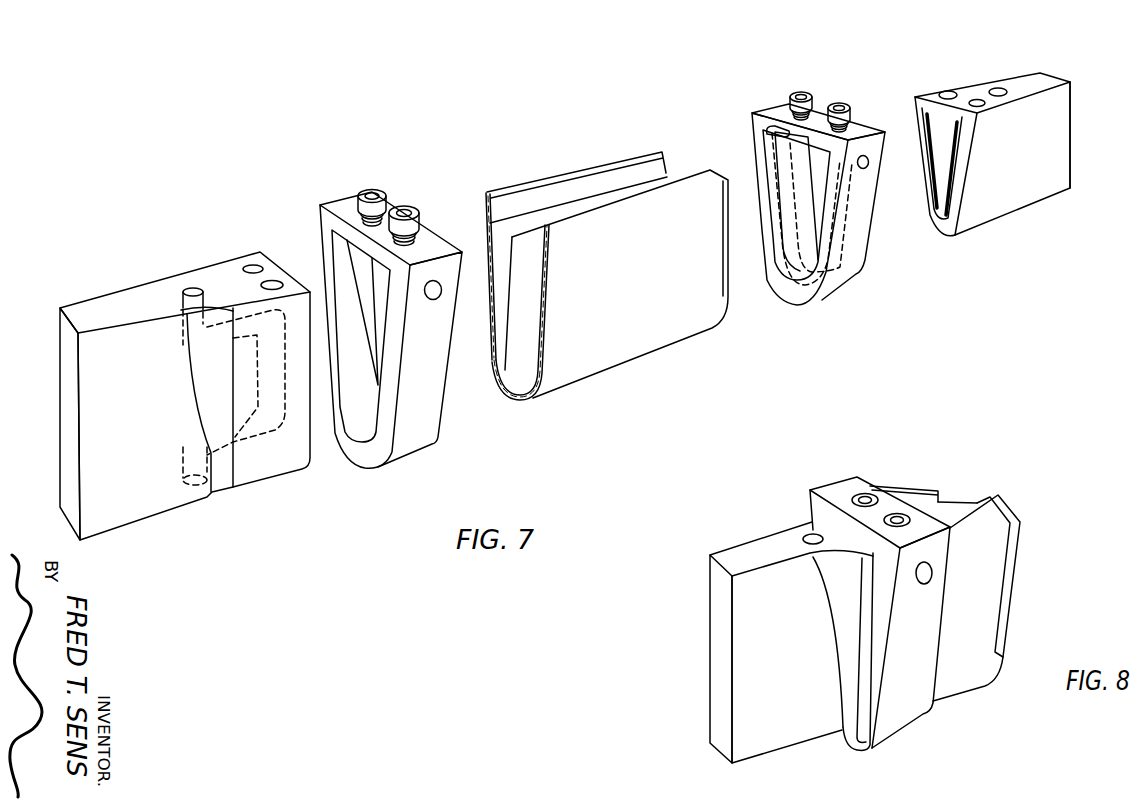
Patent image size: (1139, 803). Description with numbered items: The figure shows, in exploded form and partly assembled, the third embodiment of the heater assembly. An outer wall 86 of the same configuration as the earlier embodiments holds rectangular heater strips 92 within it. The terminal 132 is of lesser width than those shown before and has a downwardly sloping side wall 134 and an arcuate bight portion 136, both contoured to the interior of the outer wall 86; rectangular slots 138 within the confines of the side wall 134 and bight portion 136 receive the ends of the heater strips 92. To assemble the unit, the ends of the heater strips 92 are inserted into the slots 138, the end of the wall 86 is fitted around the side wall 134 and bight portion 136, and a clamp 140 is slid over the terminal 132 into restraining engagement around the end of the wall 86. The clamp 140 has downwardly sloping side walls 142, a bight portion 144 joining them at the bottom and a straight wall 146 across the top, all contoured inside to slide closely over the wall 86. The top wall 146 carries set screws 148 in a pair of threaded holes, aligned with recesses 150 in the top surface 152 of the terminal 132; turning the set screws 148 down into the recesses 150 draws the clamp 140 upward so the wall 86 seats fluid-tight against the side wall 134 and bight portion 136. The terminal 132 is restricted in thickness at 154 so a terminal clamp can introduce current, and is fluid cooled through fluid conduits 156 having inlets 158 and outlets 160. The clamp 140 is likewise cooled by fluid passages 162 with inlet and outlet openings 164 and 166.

In FIG. 7, the outer wall 86 is at (524, 188).
In FIG. 8, the outer wall 86 is at (934, 491).
In FIG. 7, the heater strips 92 is at (684, 175).
In FIG. 8, the heater strips 92 is at (990, 508).
In FIG. 7, the terminal 132 is at (213, 267).
In FIG. 8, the terminal 132 is at (776, 644).
In FIG. 7, the downwardly sloping side wall 134 is at (575, 304).
In FIG. 7, the arcuate bight portion 136 is at (947, 238).
In FIG. 7, the rectangular slots 138 is at (933, 200).
In FIG. 7, the clamp 140 is at (809, 191).
In FIG. 8, the clamp 140 is at (903, 604).
In FIG. 7, the downwardly sloping side walls 142 is at (435, 393).
In FIG. 8, the downwardly sloping side walls 142 is at (920, 698).
In FIG. 7, the bight portion 144 is at (413, 453).
In FIG. 8, the bight portion 144 is at (898, 738).
In FIG. 7, the straight wall 146 is at (863, 128).
In FIG. 8, the straight wall 146 is at (893, 502).
In FIG. 7, the set screws 148 is at (411, 206).
In FIG. 8, the set screws 148 is at (868, 495).
In FIG. 7, the recesses 150 is at (257, 263).
In FIG. 7, the top surface 152 is at (934, 92).
In FIG. 7, the restricted thickness portion 154 is at (74, 312).
In FIG. 8, the restricted thickness portion 154 is at (728, 557).
In FIG. 7, the fluid conduits 156 is at (240, 443).
In FIG. 7, the inlets 158 is at (192, 288).
In FIG. 8, the inlets 158 is at (811, 536).
In FIG. 7, the outlets 160 is at (187, 485).
In FIG. 7, the fluid passages 162 is at (833, 276).
In FIG. 7, the inlet opening 164 is at (440, 293).
In FIG. 8, the inlet opening 164 is at (929, 578).
In FIG. 7, the outlet opening 166 is at (765, 136).